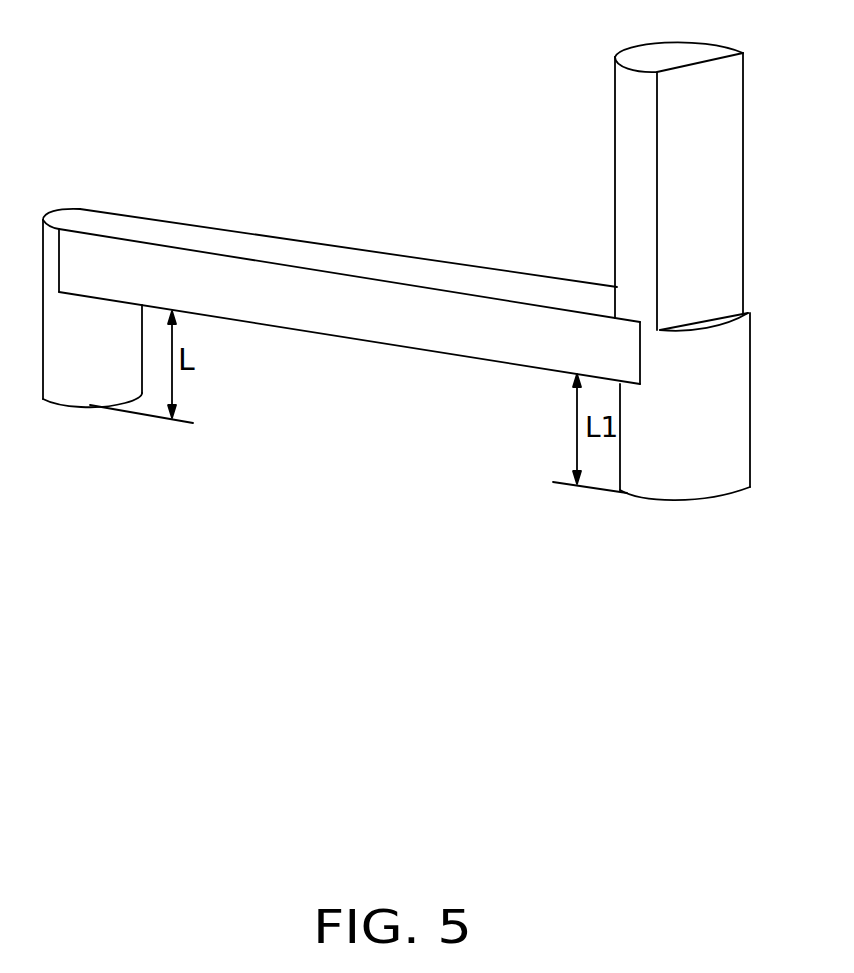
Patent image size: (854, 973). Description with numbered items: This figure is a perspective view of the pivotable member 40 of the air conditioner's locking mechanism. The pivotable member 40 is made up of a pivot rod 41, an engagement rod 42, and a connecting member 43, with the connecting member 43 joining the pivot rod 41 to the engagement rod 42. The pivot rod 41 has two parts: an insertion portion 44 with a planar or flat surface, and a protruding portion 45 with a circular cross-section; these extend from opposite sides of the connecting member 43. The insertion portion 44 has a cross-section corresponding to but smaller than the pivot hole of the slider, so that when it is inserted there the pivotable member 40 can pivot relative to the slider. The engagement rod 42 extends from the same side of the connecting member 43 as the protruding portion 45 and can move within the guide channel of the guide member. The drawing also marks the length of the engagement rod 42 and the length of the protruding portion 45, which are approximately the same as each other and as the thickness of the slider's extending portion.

The pivotable member 40 is at (363, 122).
The pivot rod 41 is at (538, 170).
The engagement rod 42 is at (100, 340).
The connecting member 43 is at (435, 315).
The insertion portion 44 is at (718, 247).
The protruding portion 45 is at (650, 410).